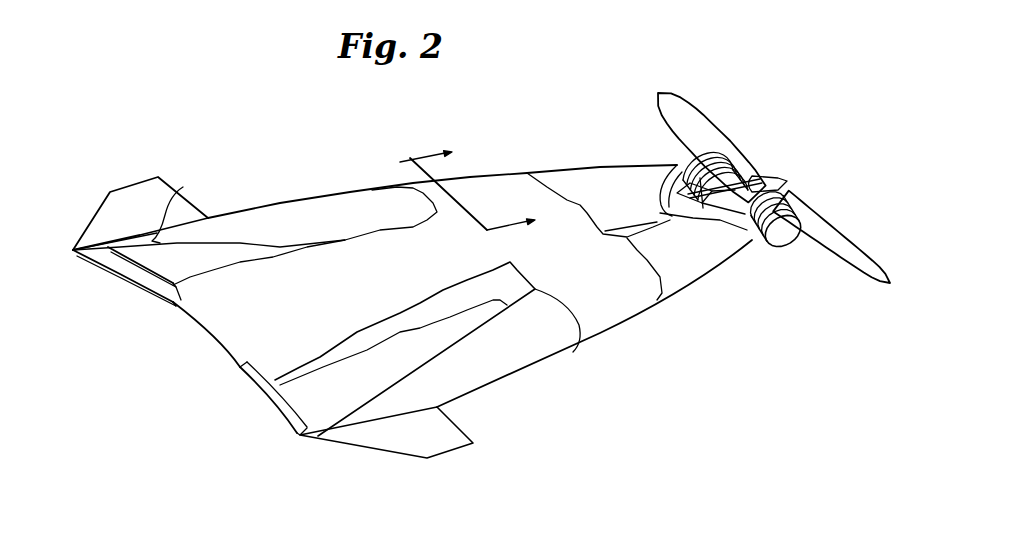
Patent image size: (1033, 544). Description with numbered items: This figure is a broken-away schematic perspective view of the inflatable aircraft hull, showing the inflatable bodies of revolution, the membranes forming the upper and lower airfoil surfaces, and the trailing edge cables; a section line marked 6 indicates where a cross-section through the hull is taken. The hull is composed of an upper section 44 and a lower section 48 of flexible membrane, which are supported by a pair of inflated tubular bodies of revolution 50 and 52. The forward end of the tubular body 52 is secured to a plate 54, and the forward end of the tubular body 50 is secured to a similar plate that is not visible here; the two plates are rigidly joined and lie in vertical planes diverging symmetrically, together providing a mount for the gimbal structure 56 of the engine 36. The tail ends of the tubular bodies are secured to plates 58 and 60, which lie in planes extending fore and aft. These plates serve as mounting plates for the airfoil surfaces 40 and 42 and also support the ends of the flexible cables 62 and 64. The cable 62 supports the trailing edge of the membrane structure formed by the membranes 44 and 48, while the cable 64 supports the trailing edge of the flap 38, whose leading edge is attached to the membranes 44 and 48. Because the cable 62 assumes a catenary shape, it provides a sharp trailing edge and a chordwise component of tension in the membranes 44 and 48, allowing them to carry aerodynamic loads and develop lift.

The engine 36 is at (787, 237).
The flap 38 is at (215, 333).
The airfoil surface 40 is at (440, 446).
The airfoil surface 42 is at (128, 193).
The upper section of flexible membrane 44 is at (358, 253).
The lower section of flexible membrane 48 is at (376, 343).
The inflated tubular body of revolution 50 is at (535, 357).
The inflated tubular body of revolution 52 is at (296, 210).
The plate 54 is at (677, 167).
The gimbal structure 56 is at (685, 208).
The plate 58 is at (297, 407).
The plate 60 is at (183, 187).
The flexible cable 62 is at (123, 263).
The flexible cable 64 is at (143, 290).
The section line 6- 6 is at (482, 184).